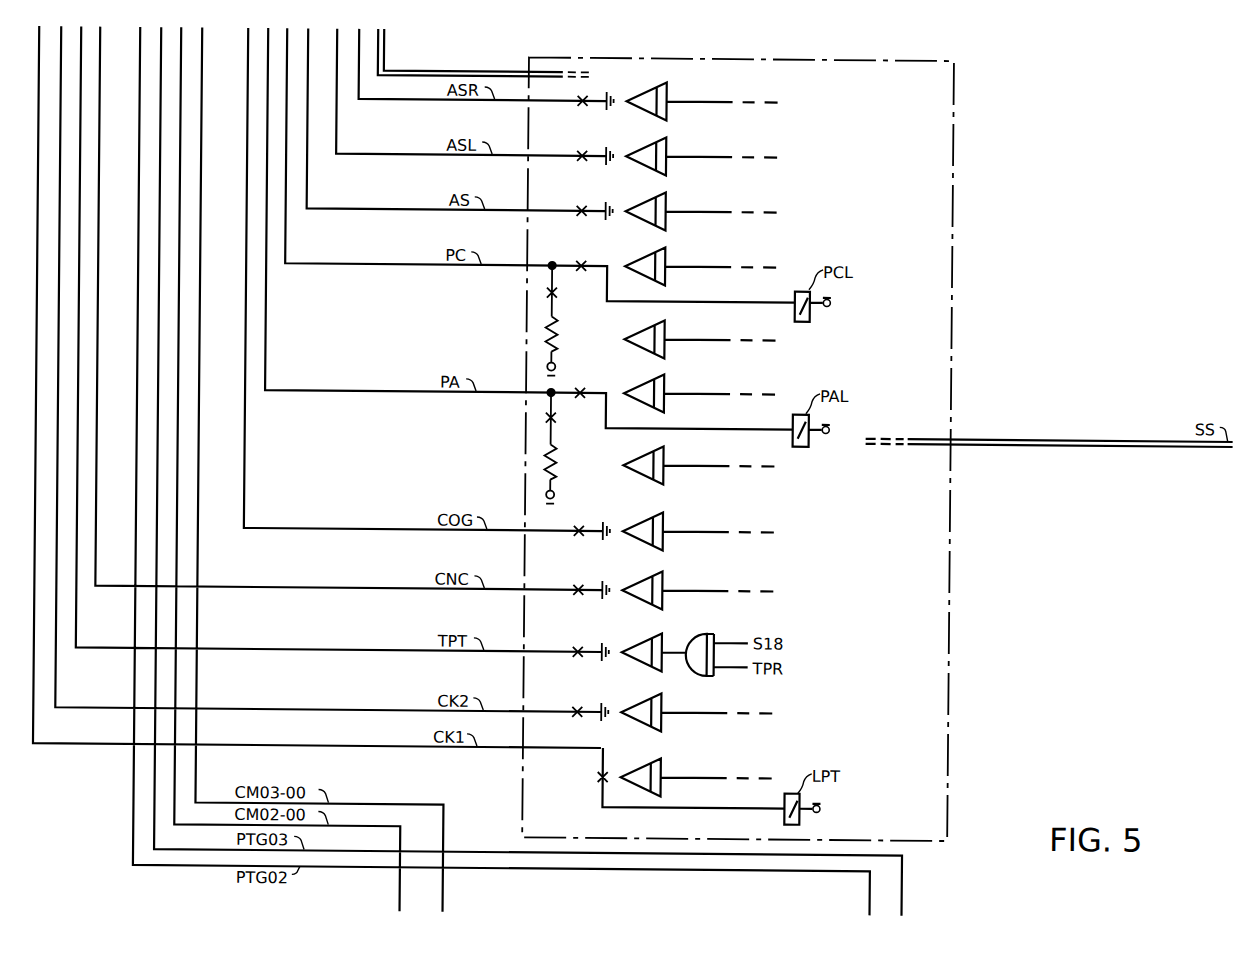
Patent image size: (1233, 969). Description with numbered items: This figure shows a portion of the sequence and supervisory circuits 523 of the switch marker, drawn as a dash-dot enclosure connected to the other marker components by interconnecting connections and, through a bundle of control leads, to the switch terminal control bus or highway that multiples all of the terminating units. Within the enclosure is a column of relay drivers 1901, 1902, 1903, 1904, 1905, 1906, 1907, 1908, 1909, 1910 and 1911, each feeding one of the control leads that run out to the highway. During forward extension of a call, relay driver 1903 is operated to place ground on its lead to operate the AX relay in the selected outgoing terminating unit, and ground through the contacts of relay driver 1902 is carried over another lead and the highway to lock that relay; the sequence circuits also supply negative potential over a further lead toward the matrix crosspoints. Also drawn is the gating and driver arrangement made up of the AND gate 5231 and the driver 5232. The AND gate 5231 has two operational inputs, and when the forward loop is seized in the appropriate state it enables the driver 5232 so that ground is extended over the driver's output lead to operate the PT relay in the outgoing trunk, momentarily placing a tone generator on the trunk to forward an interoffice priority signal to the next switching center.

The sequence and supervisory circuits 523 is at (878, 200).
The relay driver 1901 is at (662, 92).
The relay driver 1902 is at (662, 147).
The relay driver 1903 is at (662, 202).
The relay driver 1904 is at (662, 257).
The relay driver 1905 is at (662, 330).
The relay driver 1906 is at (662, 384).
The relay driver 1907 is at (662, 456).
The relay driver 1908 is at (662, 522).
The relay driver 1909 is at (662, 581).
The relay driver 1910 is at (659, 720).
The relay driver 1911 is at (660, 768).
The AND gate 5231 is at (688, 670).
The driver 5232 is at (663, 641).